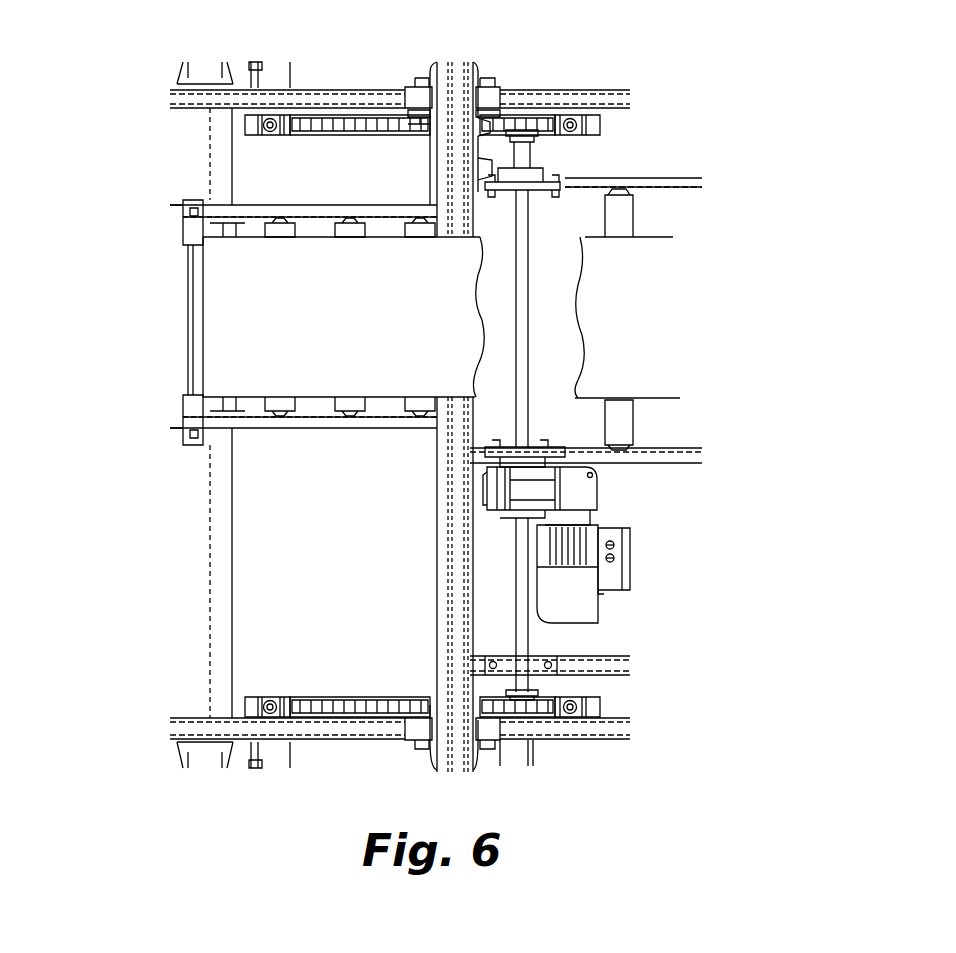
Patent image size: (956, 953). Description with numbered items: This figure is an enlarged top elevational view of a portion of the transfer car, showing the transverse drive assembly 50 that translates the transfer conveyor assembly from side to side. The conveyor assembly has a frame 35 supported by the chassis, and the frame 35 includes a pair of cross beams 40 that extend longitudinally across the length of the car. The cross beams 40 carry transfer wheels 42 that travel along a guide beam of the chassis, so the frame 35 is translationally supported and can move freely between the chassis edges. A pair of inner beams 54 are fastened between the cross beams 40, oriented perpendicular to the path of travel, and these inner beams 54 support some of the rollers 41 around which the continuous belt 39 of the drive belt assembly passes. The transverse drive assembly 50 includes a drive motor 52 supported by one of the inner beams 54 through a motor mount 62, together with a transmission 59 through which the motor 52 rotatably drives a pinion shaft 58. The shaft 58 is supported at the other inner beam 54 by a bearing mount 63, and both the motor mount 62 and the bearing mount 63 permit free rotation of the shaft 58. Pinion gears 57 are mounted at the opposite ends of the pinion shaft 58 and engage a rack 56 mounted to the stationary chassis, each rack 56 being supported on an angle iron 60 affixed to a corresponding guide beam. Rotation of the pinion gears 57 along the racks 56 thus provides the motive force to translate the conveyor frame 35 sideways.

The frame 35 is at (566, 90).
The continuous belt 39 is at (342, 323).
The cross beams 40 is at (440, 612).
The rollers 41 is at (354, 230).
The transfer wheels 42 is at (428, 84).
The transverse drive assembly 50 is at (640, 568).
The drive motor 52 is at (588, 607).
The inner beams 54 is at (636, 181).
The rack 56 is at (296, 128).
The pinion gears 57 is at (518, 122).
The pinion shaft 58 is at (527, 232).
The transmission 59 is at (492, 510).
The angle iron 60 is at (250, 122).
The motor mount 62 is at (573, 453).
The bearing mount 63 is at (550, 176).